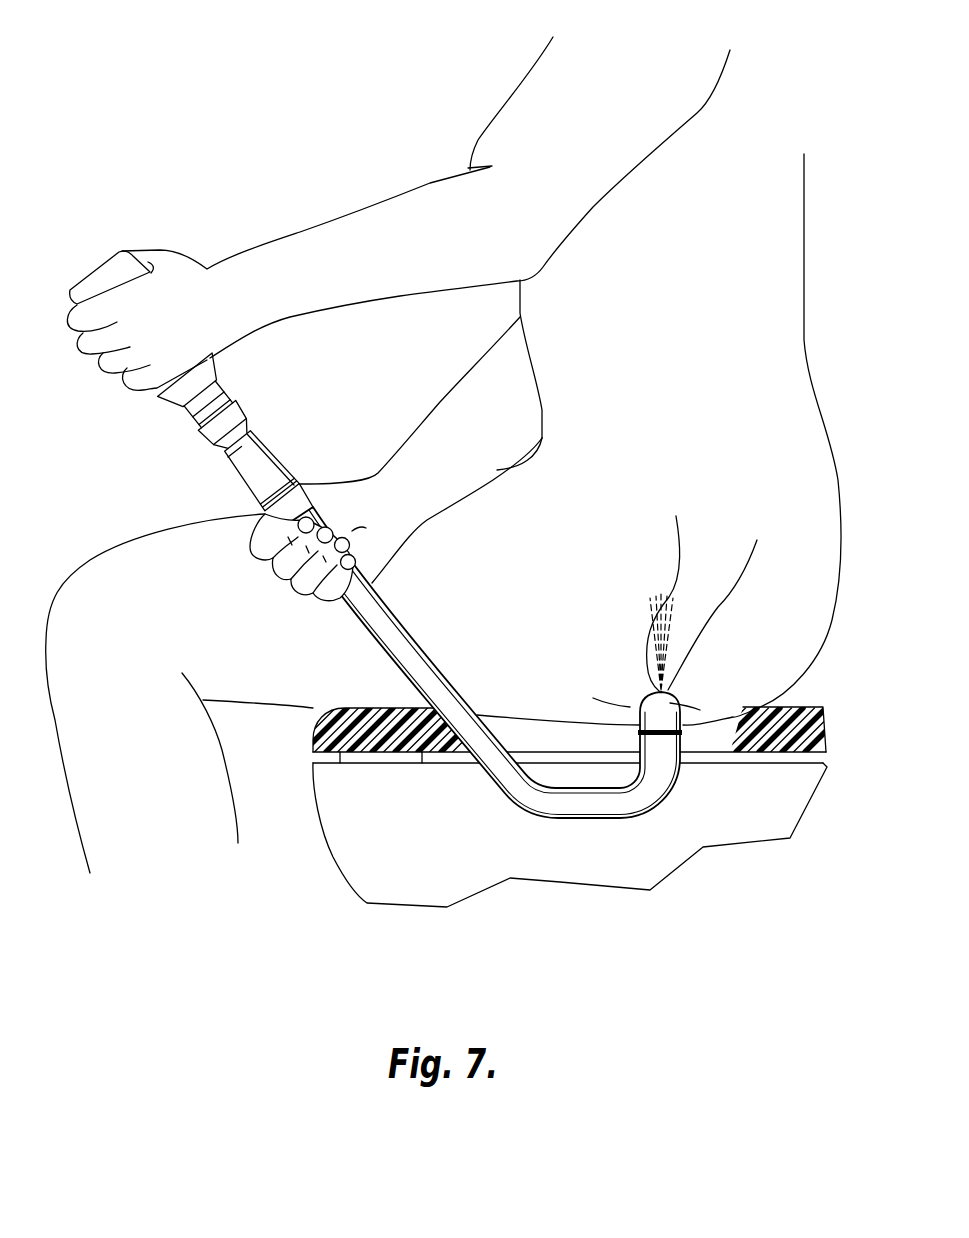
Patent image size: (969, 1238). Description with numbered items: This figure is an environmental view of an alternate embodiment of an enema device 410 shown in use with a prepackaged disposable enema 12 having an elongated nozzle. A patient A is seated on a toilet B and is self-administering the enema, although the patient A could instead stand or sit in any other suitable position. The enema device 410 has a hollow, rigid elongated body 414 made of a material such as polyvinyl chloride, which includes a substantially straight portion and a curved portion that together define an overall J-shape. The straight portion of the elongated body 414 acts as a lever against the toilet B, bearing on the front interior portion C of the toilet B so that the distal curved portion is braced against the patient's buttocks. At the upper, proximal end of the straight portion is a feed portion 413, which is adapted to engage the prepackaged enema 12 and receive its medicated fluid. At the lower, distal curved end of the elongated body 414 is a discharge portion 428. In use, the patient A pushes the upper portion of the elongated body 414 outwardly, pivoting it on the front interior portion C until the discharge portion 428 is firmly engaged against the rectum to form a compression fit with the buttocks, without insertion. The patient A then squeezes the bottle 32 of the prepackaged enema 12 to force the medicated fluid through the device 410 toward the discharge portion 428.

The prepackaged disposable enema 12 is at (102, 249).
The bottle 32 is at (148, 390).
The enema device 410 is at (454, 666).
The feed portion 413 is at (281, 446).
The elongated body 414 is at (467, 702).
The discharge portion 428 is at (683, 733).
The patient A is at (470, 124).
The toilet B is at (346, 894).
The front interior portion C is at (315, 733).